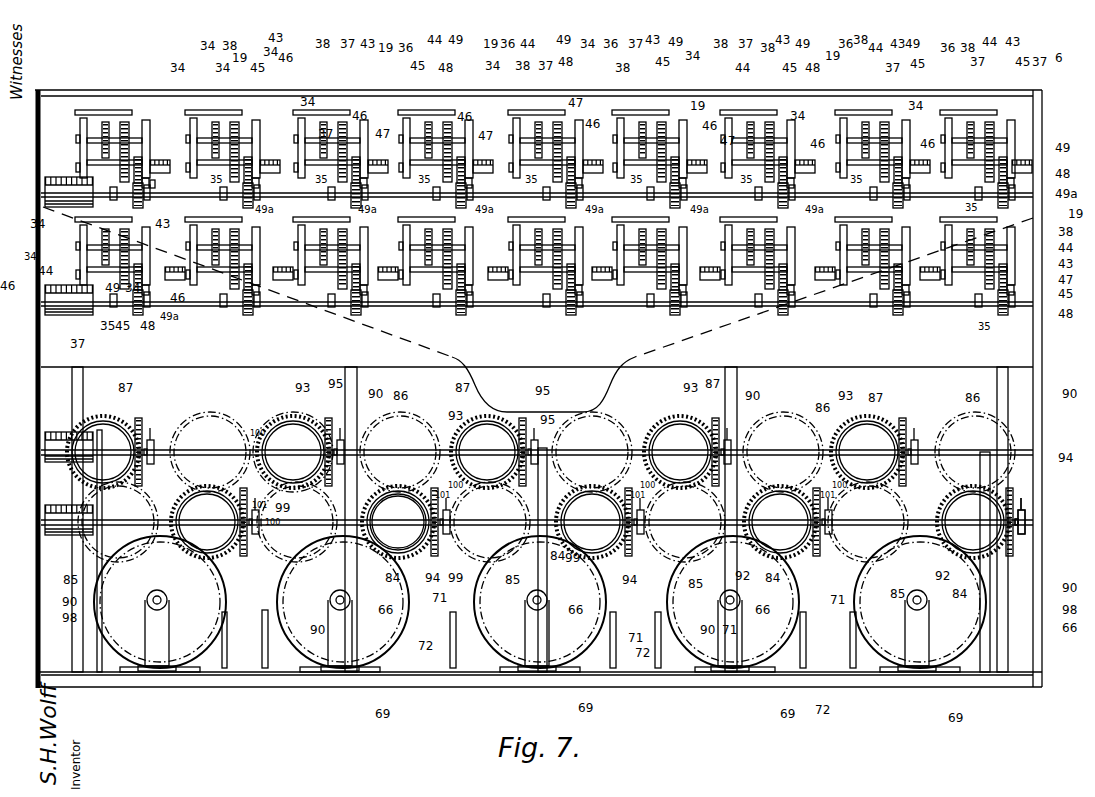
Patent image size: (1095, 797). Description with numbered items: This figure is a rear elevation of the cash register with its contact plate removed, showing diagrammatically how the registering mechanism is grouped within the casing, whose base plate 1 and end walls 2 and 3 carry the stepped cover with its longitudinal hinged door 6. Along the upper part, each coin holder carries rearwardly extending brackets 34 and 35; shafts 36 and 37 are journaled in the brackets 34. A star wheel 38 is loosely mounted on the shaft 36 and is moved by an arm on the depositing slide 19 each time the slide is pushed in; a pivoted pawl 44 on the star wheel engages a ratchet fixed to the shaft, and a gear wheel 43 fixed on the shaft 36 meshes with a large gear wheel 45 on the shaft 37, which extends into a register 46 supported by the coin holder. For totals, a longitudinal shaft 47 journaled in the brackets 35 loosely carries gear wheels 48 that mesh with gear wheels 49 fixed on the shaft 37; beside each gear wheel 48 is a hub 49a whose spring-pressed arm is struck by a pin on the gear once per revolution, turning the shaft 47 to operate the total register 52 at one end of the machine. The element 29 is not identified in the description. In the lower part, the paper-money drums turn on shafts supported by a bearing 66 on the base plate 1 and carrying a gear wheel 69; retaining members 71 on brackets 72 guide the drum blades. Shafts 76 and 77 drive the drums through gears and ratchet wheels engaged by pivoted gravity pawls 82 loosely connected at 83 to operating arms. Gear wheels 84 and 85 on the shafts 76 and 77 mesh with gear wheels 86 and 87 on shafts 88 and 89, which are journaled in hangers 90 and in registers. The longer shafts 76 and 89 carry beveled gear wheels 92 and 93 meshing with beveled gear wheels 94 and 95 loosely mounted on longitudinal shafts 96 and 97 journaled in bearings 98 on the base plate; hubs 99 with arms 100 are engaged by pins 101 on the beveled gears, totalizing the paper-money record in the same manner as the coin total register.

The base plate 1 is at (752, 688).
The end wall 2 is at (36, 342).
The end wall 3 is at (1043, 345).
The longitudinal hinged door 6 is at (78, 88).
The depositing slide 19 is at (115, 137).
The guide 29 is at (538, 282).
The bracket 34 is at (76, 116).
The bracket 35 is at (110, 187).
The shaft 36 is at (104, 121).
The shaft 37 is at (87, 162).
The star wheel 38 is at (123, 121).
The gear wheel 43 is at (139, 156).
The pivoted pawl 44 is at (85, 118).
The large gear wheel 45 is at (147, 177).
The register 46 is at (162, 159).
The longitudinal shaft 47 is at (958, 204).
The gear wheel 48 is at (141, 182).
The gear wheel 49 is at (153, 179).
The hub 49a is at (148, 200).
The total register 52 is at (50, 208).
The bearing 66 is at (168, 620).
The gear wheel 69 is at (190, 672).
The retaining member 71 is at (262, 636).
The bracket 72 is at (228, 614).
The shaft 76 is at (1036, 458).
The shaft 77 is at (822, 528).
The pivoted gravity pawl 82 is at (62, 520).
The loose connection 83 is at (62, 450).
The gear wheel 84 is at (224, 552).
The gear wheel 85 is at (308, 556).
The gear wheel 86 is at (210, 420).
The gear wheel 87 is at (282, 418).
The shaft 88 is at (965, 450).
The shaft 89 is at (904, 418).
The hanger 90 is at (83, 392).
The beveled gear wheel 92 is at (392, 546).
The beveled gear wheel 93 is at (118, 425).
The beveled gear wheel 94 is at (246, 550).
The beveled gear wheel 95 is at (141, 420).
The longitudinal shaft 96 is at (352, 519).
The longitudinal shaft 97 is at (780, 452).
The bearing 98 is at (547, 570).
The hub 99 is at (1024, 536).
The arm 100 is at (1026, 522).
The pin 101 is at (1024, 504).